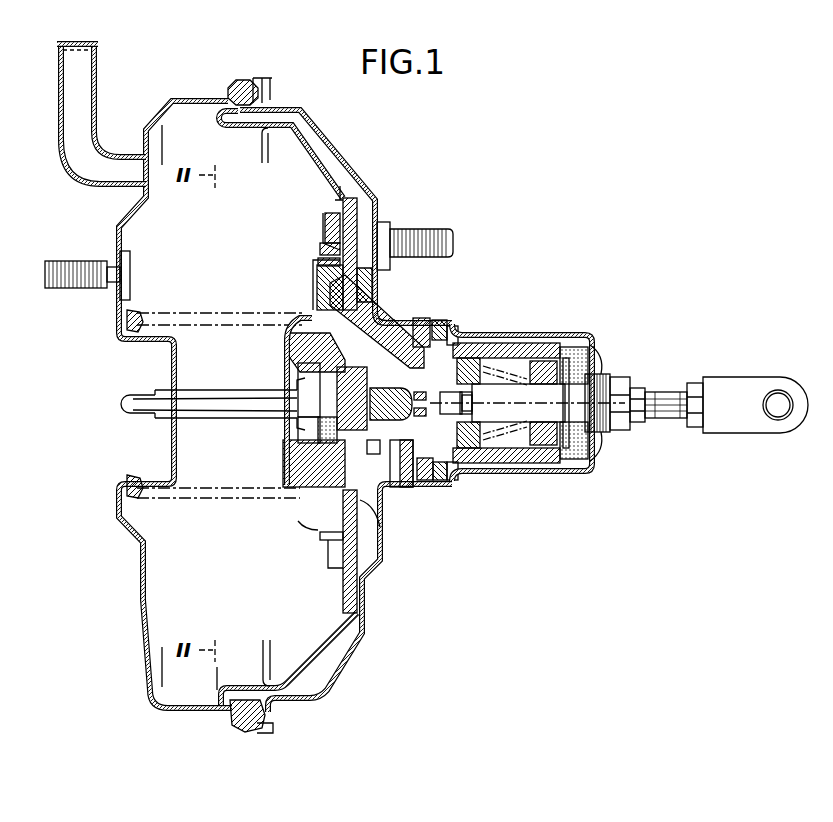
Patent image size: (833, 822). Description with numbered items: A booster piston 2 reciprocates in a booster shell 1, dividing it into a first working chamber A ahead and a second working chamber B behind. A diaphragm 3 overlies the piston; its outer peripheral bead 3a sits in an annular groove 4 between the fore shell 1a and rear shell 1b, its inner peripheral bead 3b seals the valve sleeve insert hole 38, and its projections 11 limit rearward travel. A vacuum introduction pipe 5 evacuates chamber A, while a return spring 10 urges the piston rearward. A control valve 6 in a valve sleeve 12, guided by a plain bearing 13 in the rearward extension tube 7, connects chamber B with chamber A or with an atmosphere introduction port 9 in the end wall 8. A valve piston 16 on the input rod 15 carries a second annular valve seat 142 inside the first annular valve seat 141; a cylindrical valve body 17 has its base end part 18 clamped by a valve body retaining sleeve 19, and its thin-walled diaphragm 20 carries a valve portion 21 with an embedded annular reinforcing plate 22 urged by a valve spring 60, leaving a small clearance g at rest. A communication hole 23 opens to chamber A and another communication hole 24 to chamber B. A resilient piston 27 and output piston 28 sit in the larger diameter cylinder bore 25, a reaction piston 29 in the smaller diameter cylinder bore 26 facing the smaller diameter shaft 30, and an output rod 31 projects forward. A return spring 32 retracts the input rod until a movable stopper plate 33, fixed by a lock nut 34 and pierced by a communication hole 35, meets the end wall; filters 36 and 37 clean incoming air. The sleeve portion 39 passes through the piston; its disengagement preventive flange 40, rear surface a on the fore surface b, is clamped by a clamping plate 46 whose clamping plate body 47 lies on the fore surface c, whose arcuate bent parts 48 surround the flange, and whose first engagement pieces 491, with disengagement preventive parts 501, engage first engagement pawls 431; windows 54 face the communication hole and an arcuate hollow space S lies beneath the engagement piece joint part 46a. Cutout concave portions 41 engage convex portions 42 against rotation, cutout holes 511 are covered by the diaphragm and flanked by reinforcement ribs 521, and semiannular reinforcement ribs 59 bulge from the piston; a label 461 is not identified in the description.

The booster shell 1 is at (193, 96).
The fore shell 1a is at (172, 103).
The rear shell 1b is at (320, 126).
The booster piston 2 is at (265, 136).
The diaphragm 3 is at (214, 118).
The outer peripheral bead 3a is at (244, 88).
The inner peripheral bead 3b is at (376, 320).
The annular groove 4 is at (258, 93).
The vacuum introduction pipe 5 is at (60, 110).
The control valve 6 is at (431, 479).
The rearward extension tube 7 is at (523, 333).
The end wall 8 is at (592, 355).
The atmosphere introduction port 9 is at (594, 447).
The return spring 10 is at (241, 495).
The projections 11 is at (362, 588).
The valve sleeve 12 is at (491, 472).
The plain bearing 13 is at (438, 332).
The input rod 15 is at (657, 418).
The valve piston 16 is at (380, 436).
The cylindrical valve body 17 is at (454, 334).
The base end part 18 is at (477, 356).
The valve body retaining sleeve 19 is at (523, 463).
The thin-walled diaphragm 20 is at (449, 479).
The valve portion 21 is at (419, 333).
The annular reinforcing plate 22 is at (425, 404).
The communication hole 23 is at (316, 352).
The communication hole 24 is at (396, 462).
The larger diameter cylinder bore 25 is at (336, 376).
The smaller diameter cylinder bore 26 is at (331, 436).
The resilient piston 27 is at (345, 456).
The output piston 28 is at (285, 436).
The reaction piston 29 is at (352, 388).
The smaller diameter shaft 30 is at (346, 414).
The output rod 31 is at (210, 418).
The return spring 32 is at (527, 403).
The movable stopper plate 33 is at (608, 377).
The lock nut 34 is at (638, 389).
The communication hole 35 is at (586, 456).
The filter 36 is at (520, 403).
The filter 37 is at (573, 350).
The valve sleeve insert hole 38 is at (372, 506).
The sleeve portion 39 is at (496, 344).
The disengagement preventive flange 40 is at (314, 293).
The cutout concave portions 41 is at (320, 538).
The convex portions 42 is at (327, 556).
The clamping plate 46 is at (280, 358).
The engagement piece joint part 46a is at (320, 268).
The clamping plate body 47 is at (283, 342).
The arcuate bent parts 48 is at (318, 258).
The windows 54 is at (298, 318).
The semiannular reinforcement ribs 59 is at (350, 290).
The valve spring 60 is at (456, 403).
The first annular valve seat 141 is at (405, 481).
The second annular valve seat 142 is at (391, 404).
The first engagement pawls 431 is at (316, 236).
The seal bead 461 is at (336, 212).
The first engagement pieces 491 is at (325, 250).
The disengagement preventive part 501 is at (378, 227).
The cutout holes 511 is at (377, 215).
The reinforcement ribs 521 is at (330, 228).
The first working chamber A is at (186, 257).
The second working chamber B is at (358, 193).
The arcuate hollow space S is at (322, 275).
The rear surface a is at (345, 299).
The fore surface b is at (358, 306).
The fore surface c is at (300, 519).
The small clearance g is at (410, 409).